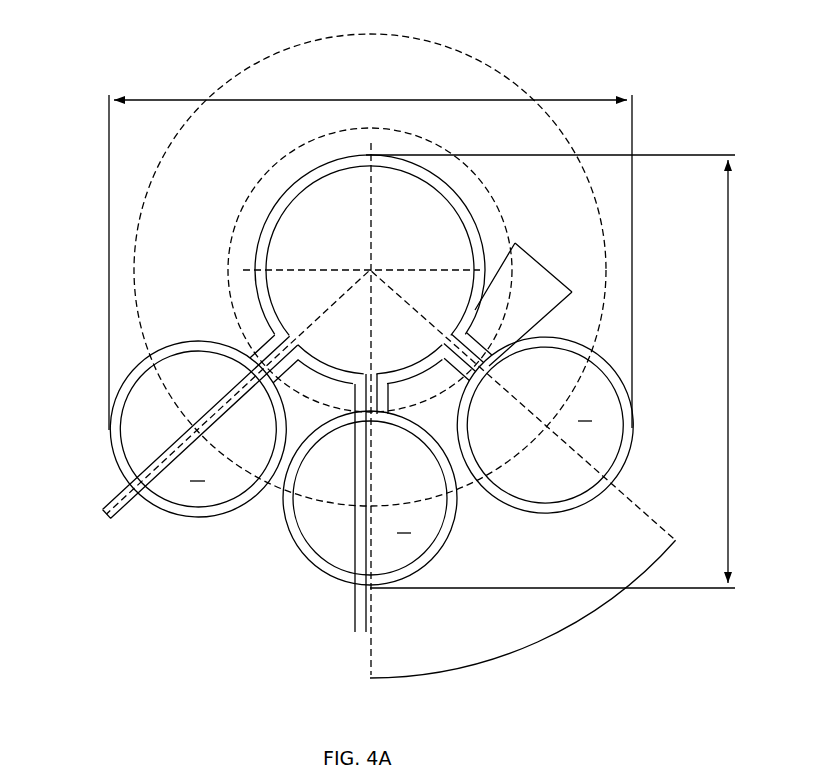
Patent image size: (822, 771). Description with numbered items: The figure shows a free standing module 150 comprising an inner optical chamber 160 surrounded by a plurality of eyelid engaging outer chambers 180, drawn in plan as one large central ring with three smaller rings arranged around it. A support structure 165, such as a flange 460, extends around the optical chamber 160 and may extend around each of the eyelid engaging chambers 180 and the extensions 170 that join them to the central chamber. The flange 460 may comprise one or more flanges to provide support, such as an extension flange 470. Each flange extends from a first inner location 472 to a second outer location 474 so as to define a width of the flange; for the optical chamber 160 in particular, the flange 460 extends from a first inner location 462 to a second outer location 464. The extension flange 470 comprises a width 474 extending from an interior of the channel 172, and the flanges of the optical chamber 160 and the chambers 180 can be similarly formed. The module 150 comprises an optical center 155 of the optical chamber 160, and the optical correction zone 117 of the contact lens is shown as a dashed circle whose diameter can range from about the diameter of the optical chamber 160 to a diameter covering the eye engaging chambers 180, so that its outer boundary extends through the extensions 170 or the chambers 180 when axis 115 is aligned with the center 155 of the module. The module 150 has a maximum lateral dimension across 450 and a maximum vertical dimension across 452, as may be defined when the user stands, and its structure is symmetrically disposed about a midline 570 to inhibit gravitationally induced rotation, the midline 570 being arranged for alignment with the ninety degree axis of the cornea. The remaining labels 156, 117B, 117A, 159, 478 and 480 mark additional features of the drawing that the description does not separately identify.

The free standing module 150 is at (664, 47).
The outer boundary 156 is at (459, 39).
The outer circle 117B is at (531, 98).
The optical correction zone 117 is at (443, 148).
The inner surface 117A is at (455, 210).
The maximum lateral dimension 450 is at (352, 97).
The maximum vertical dimension 452 is at (733, 349).
The flange 460 is at (338, 158).
The inner optical chamber 160 is at (308, 196).
The support structure 165 is at (282, 196).
The second outer location 464 is at (263, 217).
The first inner location 462 is at (263, 247).
The axis 115 is at (369, 268).
The optical center 155 is at (372, 268).
The center 159 is at (380, 273).
The midline 570 is at (368, 667).
The extension flange 470 is at (281, 377).
The eyelid engaging outer chamber 180 is at (108, 440).
The tab 478 is at (545, 267).
The extension 170 is at (246, 321).
The channel 172 is at (250, 352).
The first inner location 472 is at (624, 436).
The second outer location 474 is at (628, 458).
The tube C outer wall 480 is at (195, 518).